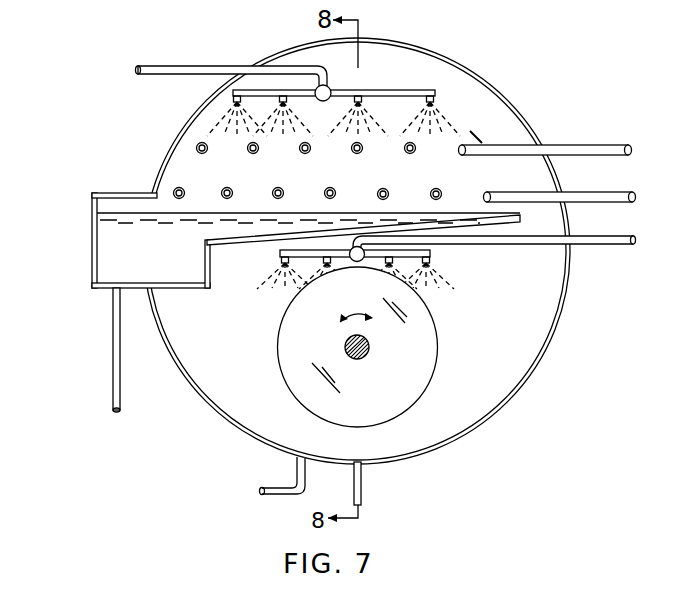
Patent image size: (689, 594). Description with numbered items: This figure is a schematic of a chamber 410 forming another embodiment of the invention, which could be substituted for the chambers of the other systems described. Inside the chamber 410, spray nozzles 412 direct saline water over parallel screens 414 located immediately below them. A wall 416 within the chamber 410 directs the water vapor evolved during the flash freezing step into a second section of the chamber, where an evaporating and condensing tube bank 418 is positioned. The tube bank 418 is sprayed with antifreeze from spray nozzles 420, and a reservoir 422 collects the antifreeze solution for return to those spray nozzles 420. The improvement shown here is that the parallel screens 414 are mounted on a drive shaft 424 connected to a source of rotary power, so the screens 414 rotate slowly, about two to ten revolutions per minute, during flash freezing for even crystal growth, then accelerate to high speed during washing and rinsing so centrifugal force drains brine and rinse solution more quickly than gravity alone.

The chamber 410 is at (551, 337).
The spray nozzles 412 is at (432, 253).
The parallel screens 414 is at (279, 339).
The wall 416 is at (243, 246).
The evaporating and condensing tube bank 418 is at (352, 154).
The spray nozzles 420 is at (385, 89).
The reservoir 422 is at (108, 264).
The drive shaft 424 is at (369, 351).